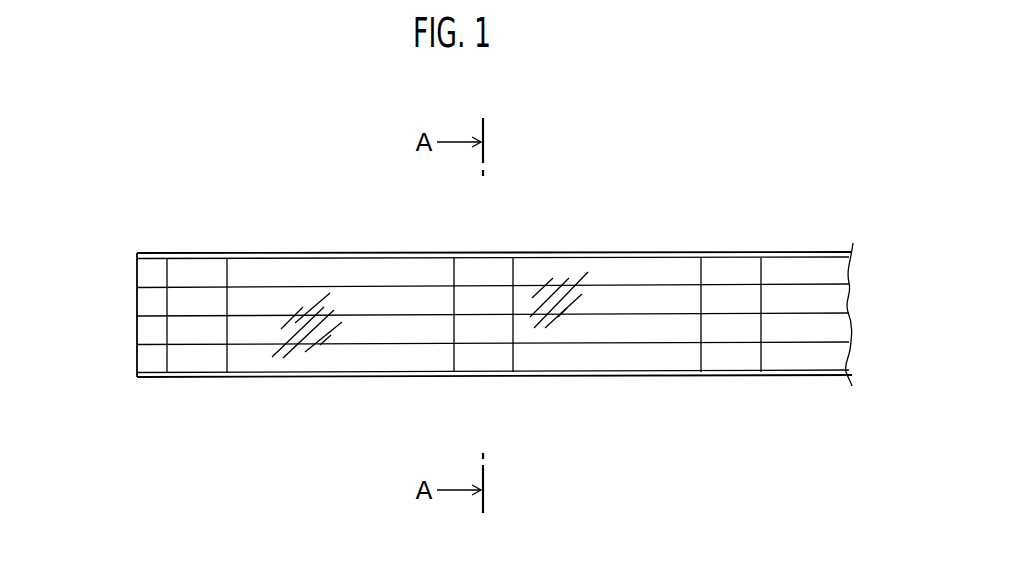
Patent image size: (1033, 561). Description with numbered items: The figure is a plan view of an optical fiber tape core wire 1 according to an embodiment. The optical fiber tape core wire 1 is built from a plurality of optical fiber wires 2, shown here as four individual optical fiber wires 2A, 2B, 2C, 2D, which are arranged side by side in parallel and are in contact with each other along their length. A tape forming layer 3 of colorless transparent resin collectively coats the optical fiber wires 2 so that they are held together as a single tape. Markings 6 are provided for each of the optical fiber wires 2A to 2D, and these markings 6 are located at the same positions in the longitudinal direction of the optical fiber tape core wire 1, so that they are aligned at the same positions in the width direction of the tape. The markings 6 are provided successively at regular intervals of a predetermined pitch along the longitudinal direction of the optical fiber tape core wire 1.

The optical fiber tape core wire 1 is at (322, 250).
The optical fiber wires 2 is at (72, 243).
The optical fiber wire 2A is at (137, 273).
The optical fiber wire 2B is at (137, 302).
The optical fiber wire 2C is at (137, 330).
The optical fiber wire 2D is at (137, 358).
The tape forming layer 3 is at (607, 251).
The markings 6 is at (205, 300).